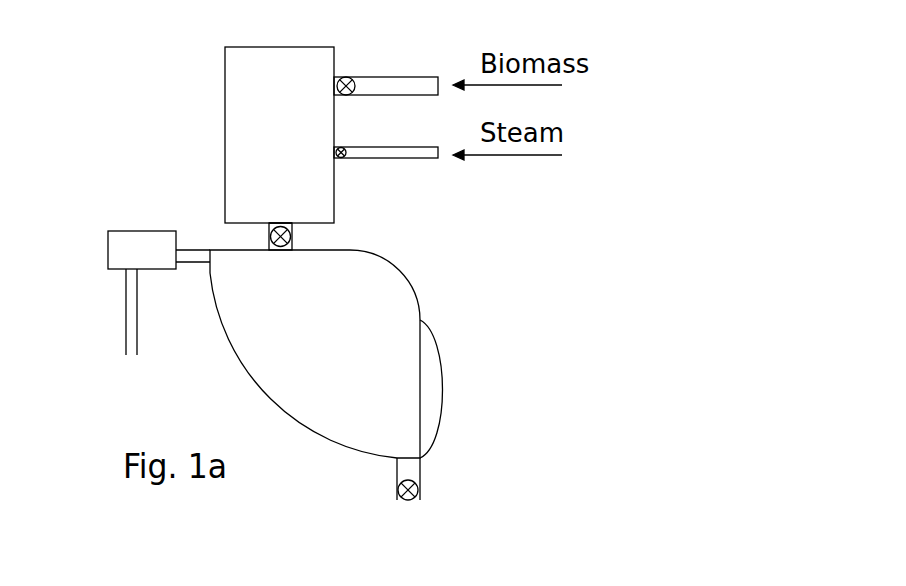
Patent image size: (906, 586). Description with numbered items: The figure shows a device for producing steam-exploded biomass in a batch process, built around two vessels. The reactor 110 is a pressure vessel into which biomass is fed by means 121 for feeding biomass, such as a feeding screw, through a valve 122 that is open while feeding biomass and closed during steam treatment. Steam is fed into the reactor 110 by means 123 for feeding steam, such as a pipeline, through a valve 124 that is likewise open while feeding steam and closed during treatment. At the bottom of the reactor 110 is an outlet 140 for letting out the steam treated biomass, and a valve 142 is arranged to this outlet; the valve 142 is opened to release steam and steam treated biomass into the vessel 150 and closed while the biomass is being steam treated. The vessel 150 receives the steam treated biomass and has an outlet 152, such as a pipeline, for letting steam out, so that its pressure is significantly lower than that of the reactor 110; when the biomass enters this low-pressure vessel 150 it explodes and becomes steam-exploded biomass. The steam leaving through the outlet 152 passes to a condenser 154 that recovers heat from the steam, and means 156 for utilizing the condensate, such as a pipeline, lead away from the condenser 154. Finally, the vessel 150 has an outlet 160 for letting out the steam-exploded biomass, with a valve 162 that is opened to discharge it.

The reactor 110 is at (302, 138).
The means for feeding biomass 121 is at (415, 85).
The valve 122 is at (349, 78).
The means for feeding steam 123 is at (420, 152).
The valve 124 is at (342, 157).
The outlet 140 is at (292, 228).
The valve 142 is at (267, 238).
The vessel 150 is at (310, 316).
The outlet 152 is at (193, 258).
The condenser 154 is at (130, 245).
The means for utilizing the condensate 156 is at (130, 338).
The outlet 160 is at (410, 470).
The valve 162 is at (420, 490).